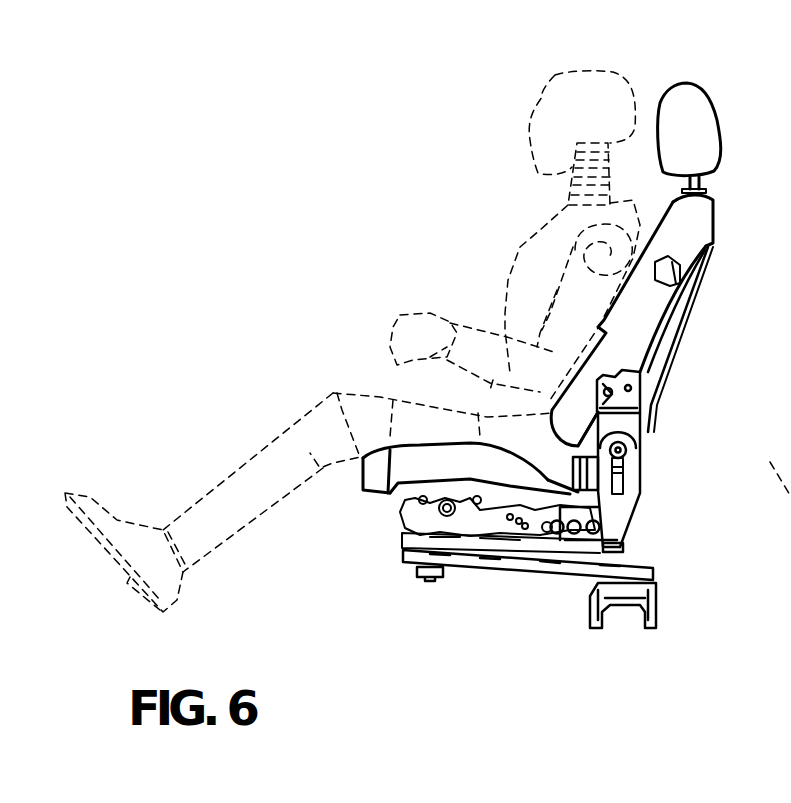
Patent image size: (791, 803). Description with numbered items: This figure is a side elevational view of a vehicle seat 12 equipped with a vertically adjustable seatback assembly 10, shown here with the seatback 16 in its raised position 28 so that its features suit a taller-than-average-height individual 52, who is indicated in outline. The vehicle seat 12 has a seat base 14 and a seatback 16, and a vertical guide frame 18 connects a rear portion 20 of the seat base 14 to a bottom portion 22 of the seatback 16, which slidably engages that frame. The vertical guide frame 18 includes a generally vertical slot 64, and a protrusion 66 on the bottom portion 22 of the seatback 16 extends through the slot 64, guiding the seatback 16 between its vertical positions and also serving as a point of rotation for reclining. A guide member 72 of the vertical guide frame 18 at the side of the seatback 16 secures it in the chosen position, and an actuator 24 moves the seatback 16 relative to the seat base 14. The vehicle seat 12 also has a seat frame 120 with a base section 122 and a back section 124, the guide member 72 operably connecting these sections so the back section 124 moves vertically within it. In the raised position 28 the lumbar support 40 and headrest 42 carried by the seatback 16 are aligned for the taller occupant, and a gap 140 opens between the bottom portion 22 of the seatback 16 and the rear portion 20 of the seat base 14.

The vertically adjustable seatback assembly 10 is at (725, 250).
The vehicle seat 12 is at (455, 207).
The seat base 14 is at (385, 478).
The seatback 16 is at (698, 218).
The vertical guide frame 18 is at (650, 493).
The rear portion of the seat base 20 is at (552, 505).
The bottom portion of the seatback 22 is at (568, 450).
The actuator 24 is at (650, 437).
The raised position 28 is at (688, 338).
The lumbar support 40 is at (592, 396).
The headrest 42 is at (684, 98).
The taller-than-average-height individual 52 is at (570, 100).
The slot 64 is at (623, 480).
The protrusion 66 is at (620, 438).
The guide member 72 is at (603, 493).
The seat frame 120 is at (468, 572).
The base section 122 is at (492, 520).
The back section 124 is at (700, 294).
The gap 140 is at (585, 487).